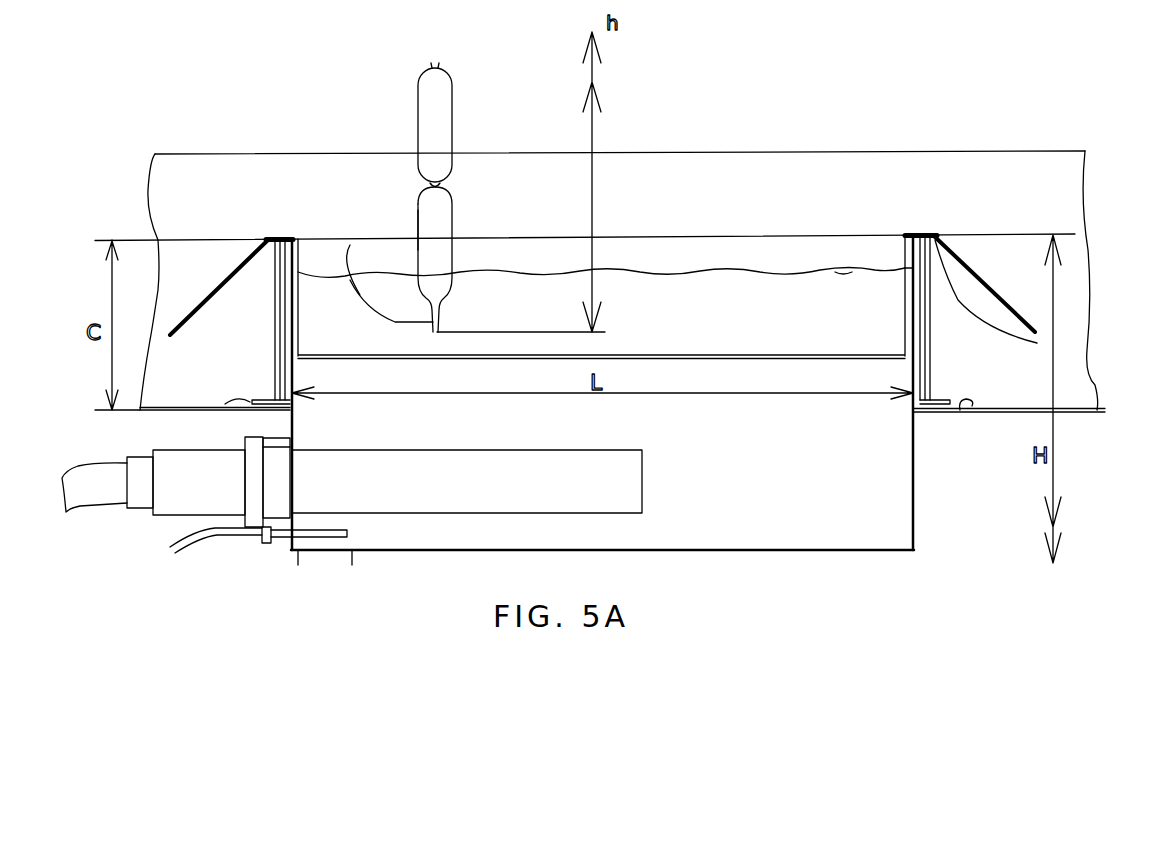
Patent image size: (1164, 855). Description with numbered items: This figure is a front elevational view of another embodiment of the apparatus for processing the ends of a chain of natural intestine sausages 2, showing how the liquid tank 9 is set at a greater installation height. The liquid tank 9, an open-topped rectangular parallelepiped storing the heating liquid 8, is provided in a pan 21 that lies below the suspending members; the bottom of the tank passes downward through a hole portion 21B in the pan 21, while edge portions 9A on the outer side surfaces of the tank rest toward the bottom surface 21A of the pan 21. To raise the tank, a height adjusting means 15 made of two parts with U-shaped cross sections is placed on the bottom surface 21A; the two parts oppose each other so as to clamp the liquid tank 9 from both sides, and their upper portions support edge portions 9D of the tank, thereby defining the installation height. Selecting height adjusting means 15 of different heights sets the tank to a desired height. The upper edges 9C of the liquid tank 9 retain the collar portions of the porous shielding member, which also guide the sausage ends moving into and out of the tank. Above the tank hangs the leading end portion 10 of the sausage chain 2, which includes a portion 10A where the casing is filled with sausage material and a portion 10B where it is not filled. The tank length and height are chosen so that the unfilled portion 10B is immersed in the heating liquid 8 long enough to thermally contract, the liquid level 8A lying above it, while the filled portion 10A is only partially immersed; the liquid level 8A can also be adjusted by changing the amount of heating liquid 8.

The chain of natural intestine sausages 2 is at (409, 94).
The heating liquid 8 is at (710, 310).
The liquid level 8A is at (843, 276).
The liquid tank 9 is at (916, 536).
The edge portions 9A is at (217, 403).
The upper edges 9C is at (294, 236).
The edge portions 9D is at (268, 248).
The leading end portion 10 is at (350, 245).
The portion where sausage material is filled 10A is at (402, 245).
The portion where sausage material is not filled 10B is at (350, 280).
The height adjusting means 15 is at (273, 371).
The pan 21 is at (185, 210).
The bottom surface 21A is at (1075, 408).
The hole portion 21B is at (915, 414).